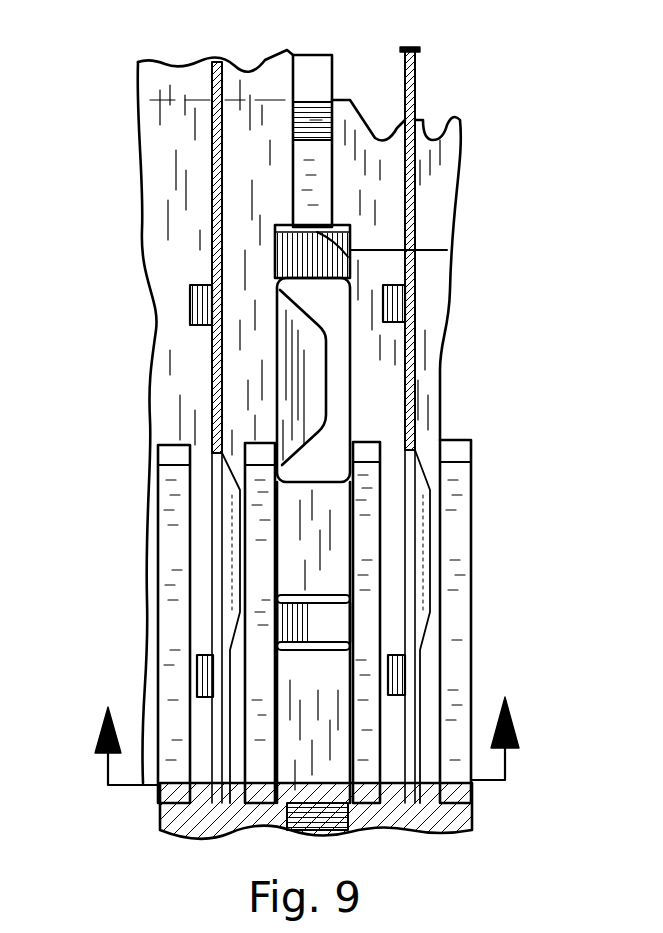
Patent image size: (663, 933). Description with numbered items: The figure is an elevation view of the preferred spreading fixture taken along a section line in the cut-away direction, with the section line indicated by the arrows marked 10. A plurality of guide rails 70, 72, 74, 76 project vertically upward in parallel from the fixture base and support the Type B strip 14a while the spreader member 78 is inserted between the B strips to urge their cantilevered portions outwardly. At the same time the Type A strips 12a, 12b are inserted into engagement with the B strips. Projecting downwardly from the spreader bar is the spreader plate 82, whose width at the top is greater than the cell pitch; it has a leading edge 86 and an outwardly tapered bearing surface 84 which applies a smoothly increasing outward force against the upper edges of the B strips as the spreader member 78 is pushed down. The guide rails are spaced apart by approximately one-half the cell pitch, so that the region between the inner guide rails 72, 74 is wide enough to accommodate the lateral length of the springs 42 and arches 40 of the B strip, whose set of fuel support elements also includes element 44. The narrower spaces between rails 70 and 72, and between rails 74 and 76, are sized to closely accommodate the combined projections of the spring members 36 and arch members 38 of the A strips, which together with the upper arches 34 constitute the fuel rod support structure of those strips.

The section line 10 is at (305, 719).
The Type A strip 12a is at (458, 394).
The Type A strip 12b is at (190, 361).
The Type B strip 14a is at (160, 207).
The upper arch 34 is at (372, 310).
The spring member 36 is at (437, 513).
The lower arch 38 is at (398, 673).
The arch 40 is at (350, 228).
The spring element 42 is at (313, 370).
The fuel support element 44 is at (322, 625).
The guide rail 70 is at (470, 525).
The guide rail 72 is at (368, 642).
The guide rail 74 is at (258, 518).
The guide rail 76 is at (178, 598).
The spreader member 78 is at (334, 72).
The spreader plate 82 is at (318, 118).
The outwardly tapered bearing surface 84 is at (320, 197).
The leading edge 86 is at (352, 250).